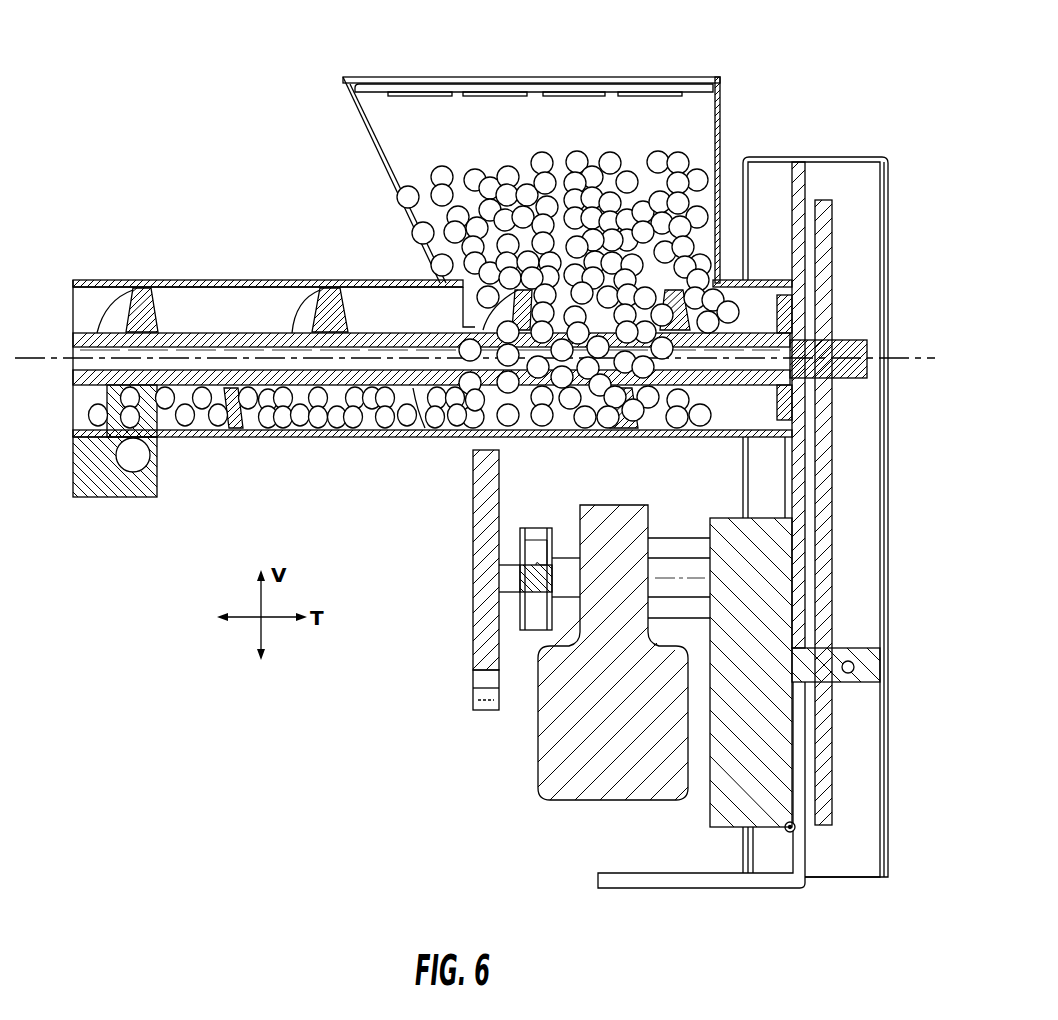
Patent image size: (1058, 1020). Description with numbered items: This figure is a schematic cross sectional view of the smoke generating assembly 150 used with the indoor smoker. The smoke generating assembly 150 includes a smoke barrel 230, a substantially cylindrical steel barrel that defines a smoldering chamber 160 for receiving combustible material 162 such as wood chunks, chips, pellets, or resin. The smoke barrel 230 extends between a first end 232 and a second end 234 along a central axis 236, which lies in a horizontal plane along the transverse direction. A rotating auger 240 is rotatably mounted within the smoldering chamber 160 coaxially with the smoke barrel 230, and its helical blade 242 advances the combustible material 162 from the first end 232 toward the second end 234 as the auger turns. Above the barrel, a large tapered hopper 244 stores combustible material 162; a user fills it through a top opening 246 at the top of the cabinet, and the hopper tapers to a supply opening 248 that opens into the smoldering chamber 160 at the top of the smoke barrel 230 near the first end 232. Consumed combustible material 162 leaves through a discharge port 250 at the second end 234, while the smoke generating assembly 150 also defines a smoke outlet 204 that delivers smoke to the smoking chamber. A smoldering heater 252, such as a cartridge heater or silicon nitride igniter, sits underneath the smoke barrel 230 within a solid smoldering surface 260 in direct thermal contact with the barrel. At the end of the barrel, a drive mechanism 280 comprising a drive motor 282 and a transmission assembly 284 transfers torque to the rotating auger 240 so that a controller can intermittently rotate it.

The smoke generating assembly 150 is at (187, 131).
The smoldering chamber 160 is at (257, 318).
The combustible material 162 is at (593, 177).
The smoke outlet 204 is at (62, 308).
The smoke barrel 230 is at (290, 287).
The first end 232 is at (768, 278).
The second end 234 is at (80, 280).
The central axis 236 is at (80, 387).
The rotating auger 240 is at (182, 333).
The helical blade 242 is at (132, 302).
The hopper 244 is at (372, 133).
The top opening 246 is at (520, 77).
The supply opening 248 is at (666, 294).
The discharge port 250 is at (70, 432).
The smoldering heater 252 is at (135, 455).
The smoldering surface 260 is at (110, 438).
The drive mechanism 280 is at (435, 733).
The drive motor 282 is at (570, 752).
The transmission assembly 284 is at (822, 560).